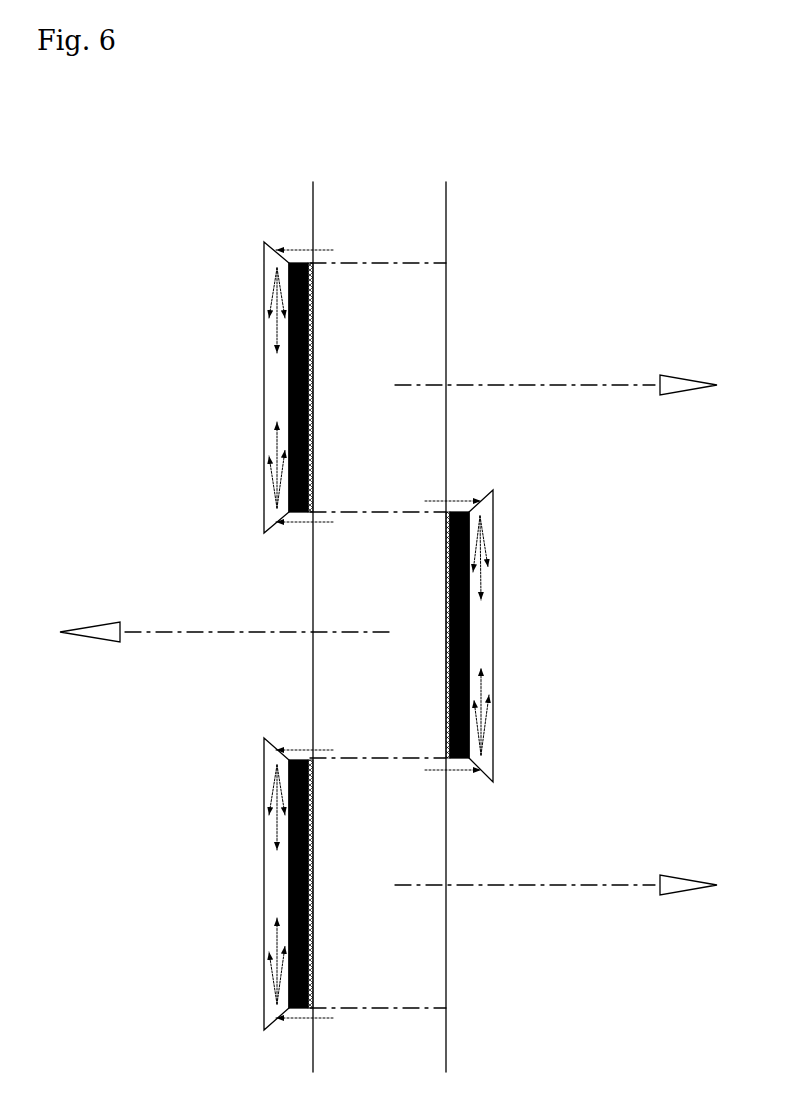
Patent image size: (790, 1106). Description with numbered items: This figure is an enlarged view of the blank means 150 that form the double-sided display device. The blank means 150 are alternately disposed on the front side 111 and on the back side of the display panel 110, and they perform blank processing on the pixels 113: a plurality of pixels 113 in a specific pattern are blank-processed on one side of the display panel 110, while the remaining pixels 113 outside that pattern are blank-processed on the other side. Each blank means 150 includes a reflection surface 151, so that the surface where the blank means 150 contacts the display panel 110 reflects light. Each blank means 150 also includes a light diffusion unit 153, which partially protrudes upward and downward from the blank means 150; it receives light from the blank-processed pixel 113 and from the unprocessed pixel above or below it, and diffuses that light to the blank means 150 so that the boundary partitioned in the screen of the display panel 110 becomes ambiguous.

The display panel 110 is at (393, 568).
The front side 111 is at (313, 695).
The pixels 113 is at (447, 238).
The blank means 150 is at (364, 609).
The reflection surface 151 is at (312, 290).
The light diffusion unit 153 is at (265, 452).